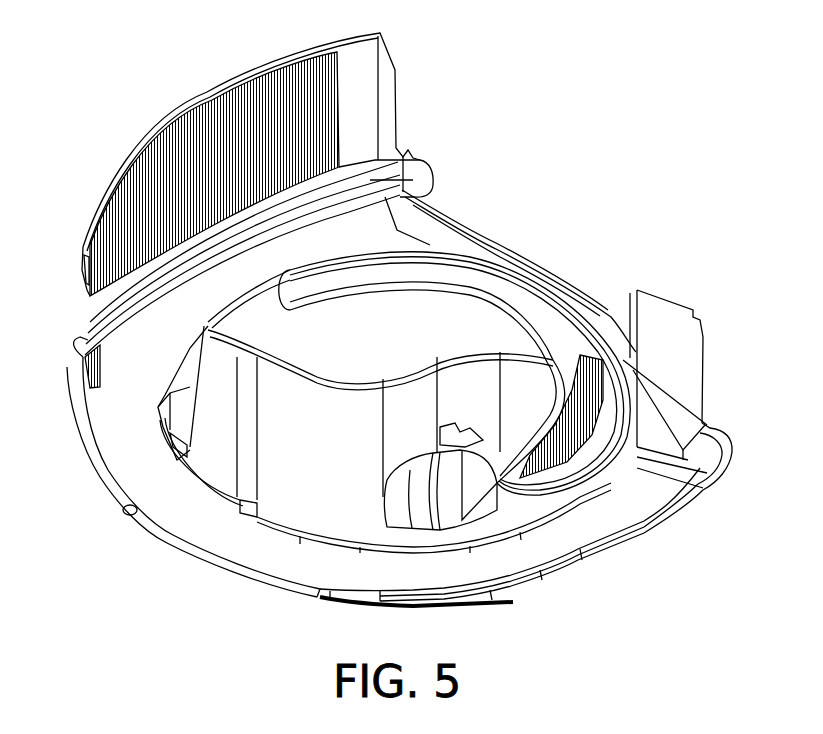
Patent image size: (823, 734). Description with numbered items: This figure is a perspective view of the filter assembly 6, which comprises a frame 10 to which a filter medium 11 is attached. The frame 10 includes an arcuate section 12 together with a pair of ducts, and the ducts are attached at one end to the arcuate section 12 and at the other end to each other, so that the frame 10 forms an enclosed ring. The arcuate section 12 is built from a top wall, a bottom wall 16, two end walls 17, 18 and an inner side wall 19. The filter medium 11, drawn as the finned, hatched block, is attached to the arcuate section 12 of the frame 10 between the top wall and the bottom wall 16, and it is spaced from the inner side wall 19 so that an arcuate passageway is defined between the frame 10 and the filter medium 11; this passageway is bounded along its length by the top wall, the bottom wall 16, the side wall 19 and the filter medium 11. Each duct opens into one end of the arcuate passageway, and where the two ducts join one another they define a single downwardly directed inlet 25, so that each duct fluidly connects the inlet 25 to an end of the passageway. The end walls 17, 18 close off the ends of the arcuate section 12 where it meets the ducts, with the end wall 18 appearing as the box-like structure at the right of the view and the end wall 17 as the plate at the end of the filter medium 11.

The filter assembly 6 is at (77, 130).
The frame 10 is at (700, 372).
The filter medium 11 is at (207, 108).
The arcuate section 12 is at (153, 530).
The bottom wall 16 is at (558, 547).
The end wall 17 is at (386, 112).
The end wall 18 is at (672, 320).
The inner side wall 19 is at (313, 513).
The inlet 25 is at (474, 273).